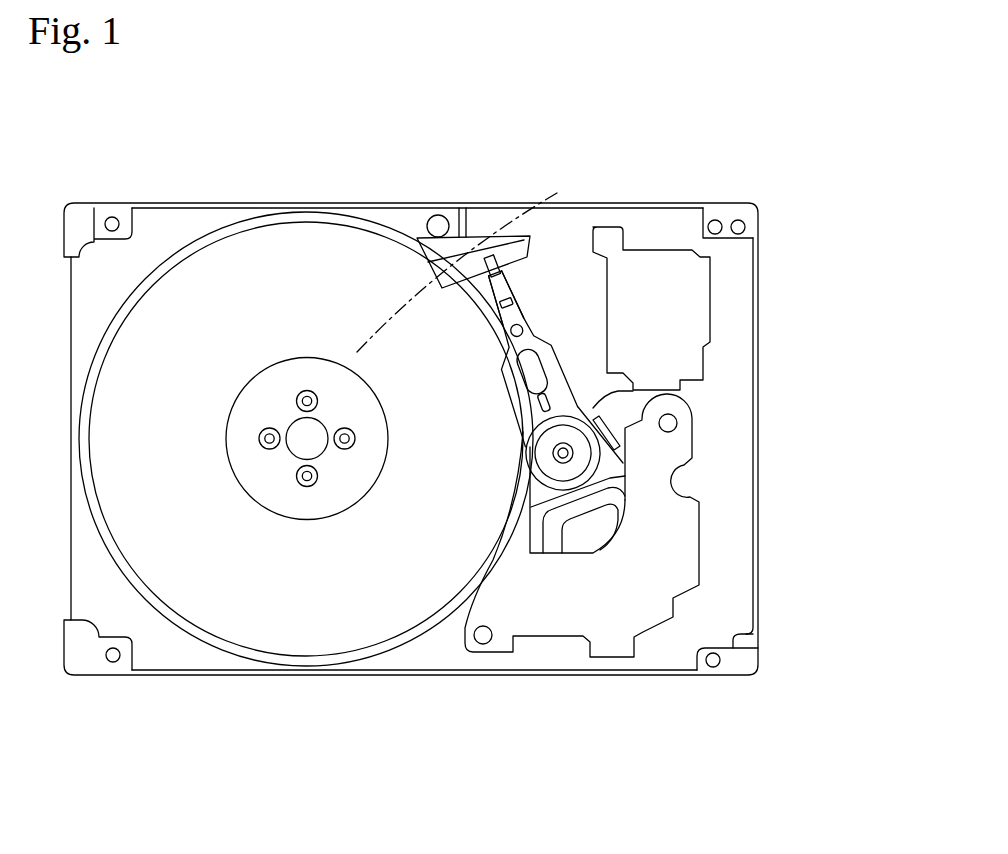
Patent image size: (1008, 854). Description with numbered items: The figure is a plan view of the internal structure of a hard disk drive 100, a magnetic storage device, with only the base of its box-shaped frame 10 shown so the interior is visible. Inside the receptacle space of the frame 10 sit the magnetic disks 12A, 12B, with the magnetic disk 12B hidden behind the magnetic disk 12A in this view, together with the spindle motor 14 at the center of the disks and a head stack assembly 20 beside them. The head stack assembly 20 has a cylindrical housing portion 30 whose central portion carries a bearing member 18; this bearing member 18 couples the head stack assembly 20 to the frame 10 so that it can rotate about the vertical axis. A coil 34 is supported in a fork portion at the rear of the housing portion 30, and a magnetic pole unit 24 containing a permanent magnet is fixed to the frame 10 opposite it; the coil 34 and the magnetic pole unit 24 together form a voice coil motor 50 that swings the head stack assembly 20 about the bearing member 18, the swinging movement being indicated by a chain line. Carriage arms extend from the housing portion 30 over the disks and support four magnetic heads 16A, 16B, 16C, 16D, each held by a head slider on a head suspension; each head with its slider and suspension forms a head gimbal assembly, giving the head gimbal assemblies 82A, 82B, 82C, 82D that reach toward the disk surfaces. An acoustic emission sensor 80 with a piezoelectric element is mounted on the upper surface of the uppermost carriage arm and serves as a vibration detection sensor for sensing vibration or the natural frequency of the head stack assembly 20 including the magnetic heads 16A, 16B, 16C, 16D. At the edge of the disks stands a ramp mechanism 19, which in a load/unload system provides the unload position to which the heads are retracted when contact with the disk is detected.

The hard disk drive 100 is at (633, 138).
The frame 10 is at (661, 204).
The magnetic disk 12A is at (306, 484).
The magnetic disk 12B is at (292, 640).
The spindle motor 14 is at (307, 370).
The magnetic head 16A is at (492, 266).
The magnetic head 16B is at (492, 266).
The magnetic head 16C is at (492, 266).
The magnetic head 16D is at (492, 266).
The bearing member 18 is at (562, 452).
The ramp mechanism 19 is at (466, 240).
The head stack assembly 20 is at (623, 371).
The magnetic pole unit 24 is at (643, 633).
The housing portion 30 is at (603, 471).
The coil 34 is at (555, 550).
The voice coil motor 50 is at (587, 492).
The acoustic emission sensor 80 is at (570, 387).
The head gimbal assembly 82A is at (503, 296).
The head gimbal assembly 82B is at (503, 296).
The head gimbal assembly 82C is at (503, 296).
The head gimbal assembly 82D is at (503, 296).